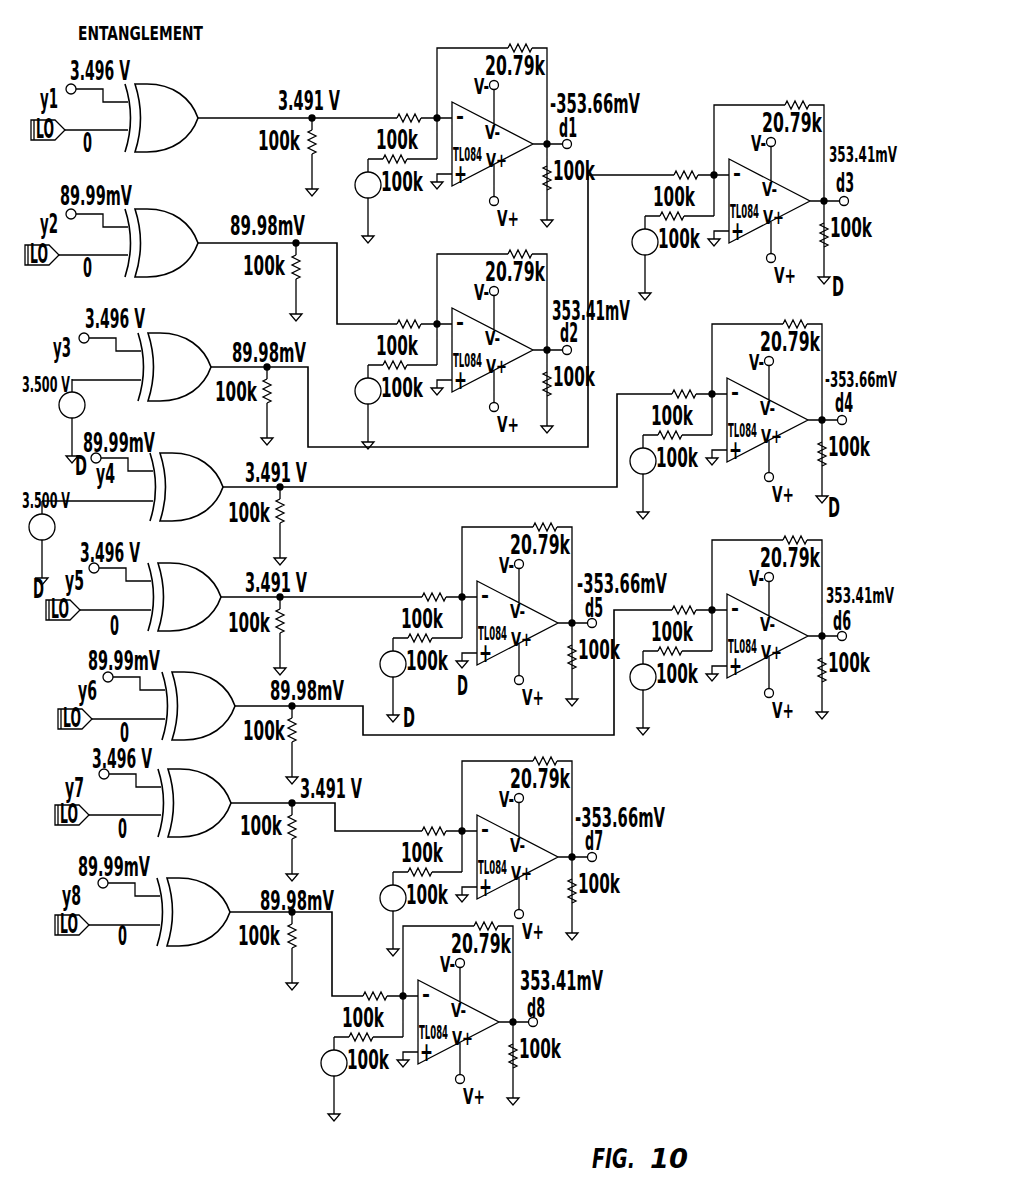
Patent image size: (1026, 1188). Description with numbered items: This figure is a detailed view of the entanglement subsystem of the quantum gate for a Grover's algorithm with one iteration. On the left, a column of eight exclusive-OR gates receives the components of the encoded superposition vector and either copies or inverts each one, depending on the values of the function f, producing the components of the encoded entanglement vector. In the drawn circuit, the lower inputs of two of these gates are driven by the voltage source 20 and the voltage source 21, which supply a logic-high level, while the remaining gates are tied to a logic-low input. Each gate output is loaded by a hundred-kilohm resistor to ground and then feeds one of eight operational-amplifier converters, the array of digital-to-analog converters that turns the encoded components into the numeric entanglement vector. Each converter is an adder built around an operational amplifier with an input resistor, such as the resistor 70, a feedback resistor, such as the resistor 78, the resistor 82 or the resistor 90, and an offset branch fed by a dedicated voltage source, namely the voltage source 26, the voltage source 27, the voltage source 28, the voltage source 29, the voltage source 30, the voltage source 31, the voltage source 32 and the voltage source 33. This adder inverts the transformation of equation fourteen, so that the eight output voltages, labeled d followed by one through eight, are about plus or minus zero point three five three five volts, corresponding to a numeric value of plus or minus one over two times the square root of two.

The voltage source V20 20 is at (88, 421).
The voltage source V21 21 is at (58, 543).
The voltage source V26 26 is at (358, 201).
The voltage source V27 27 is at (357, 407).
The voltage source V28 28 is at (634, 258).
The voltage source V29 29 is at (654, 477).
The voltage source V30 30 is at (379, 680).
The voltage source V31 31 is at (654, 693).
The voltage source V32 32 is at (379, 914).
The voltage source V33 33 is at (322, 1079).
The resistor R70 70 is at (409, 311).
The feedback resistor R78 78 is at (799, 308).
The feedback resistor R82 82 is at (549, 512).
The feedback resistor R90 90 is at (559, 748).